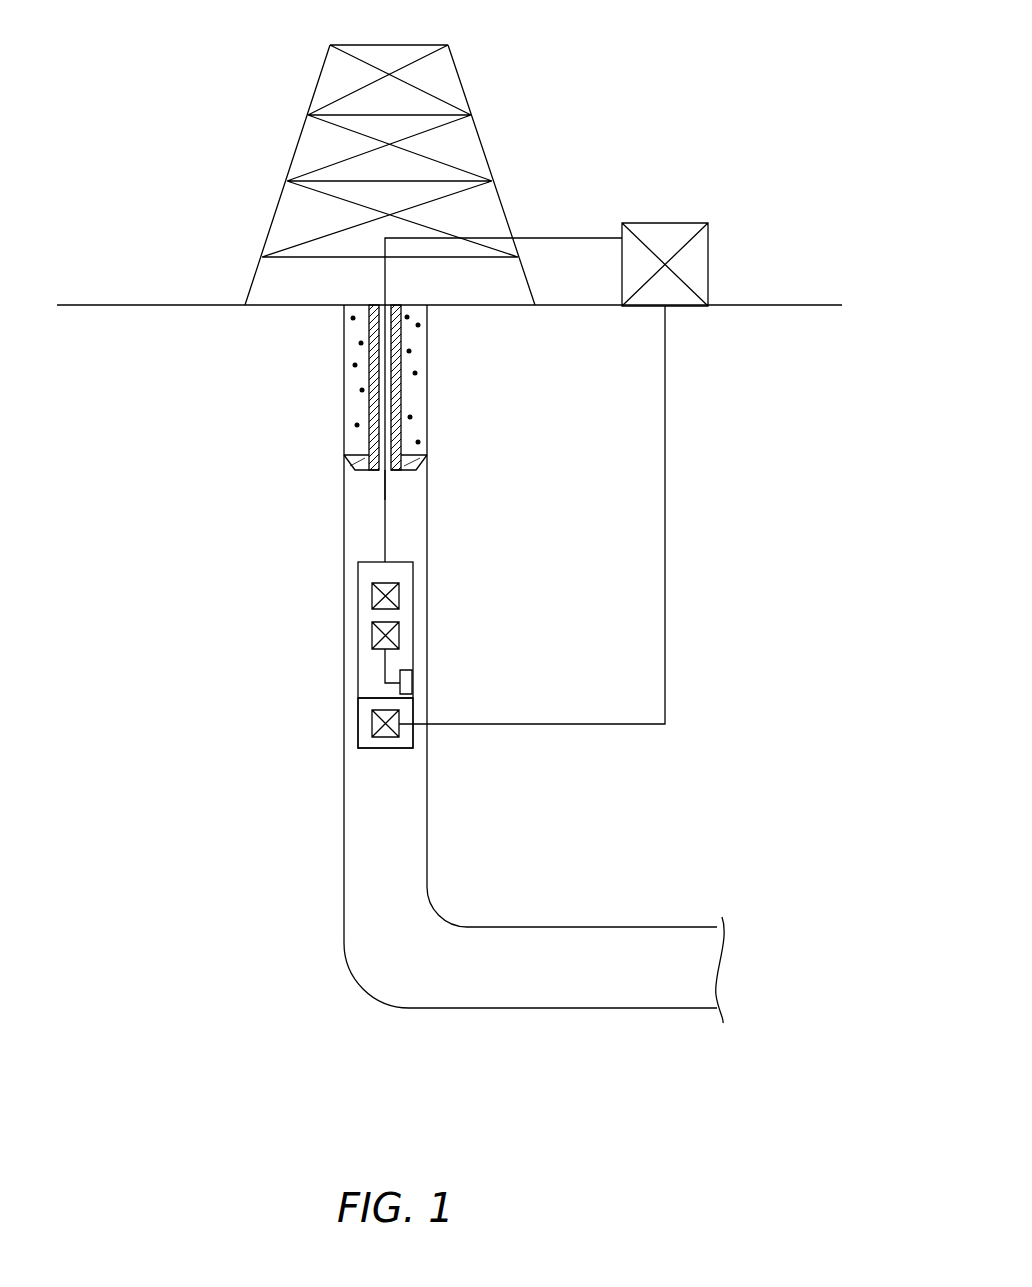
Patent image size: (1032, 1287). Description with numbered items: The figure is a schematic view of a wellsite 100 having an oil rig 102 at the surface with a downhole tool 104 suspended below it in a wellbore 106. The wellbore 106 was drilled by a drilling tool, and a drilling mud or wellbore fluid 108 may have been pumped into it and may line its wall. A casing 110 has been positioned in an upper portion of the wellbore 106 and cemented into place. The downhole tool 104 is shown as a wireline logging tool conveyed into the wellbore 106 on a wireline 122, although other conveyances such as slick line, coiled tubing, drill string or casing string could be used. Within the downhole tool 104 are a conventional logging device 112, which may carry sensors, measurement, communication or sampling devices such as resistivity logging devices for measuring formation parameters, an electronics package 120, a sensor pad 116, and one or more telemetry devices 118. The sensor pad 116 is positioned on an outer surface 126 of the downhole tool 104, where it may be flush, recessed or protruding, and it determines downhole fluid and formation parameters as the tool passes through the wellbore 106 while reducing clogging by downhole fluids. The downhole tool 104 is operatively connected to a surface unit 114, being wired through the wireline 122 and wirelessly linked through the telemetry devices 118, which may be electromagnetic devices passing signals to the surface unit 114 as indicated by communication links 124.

The wellsite 100 is at (810, 40).
The oil rig 102 is at (480, 130).
The downhole tool 104 is at (388, 666).
The wellbore 106 is at (427, 543).
The wellbore fluid 108 is at (415, 700).
The casing 110 is at (400, 388).
The conventional logging device 112 is at (399, 596).
The surface unit 114 is at (708, 250).
The sensor pad 116 is at (412, 680).
The telemetry device 118 is at (399, 725).
The electronics package 120 is at (399, 635).
The wireline 122 is at (402, 495).
The communication links 124 is at (667, 572).
The outer surface 126 is at (358, 678).